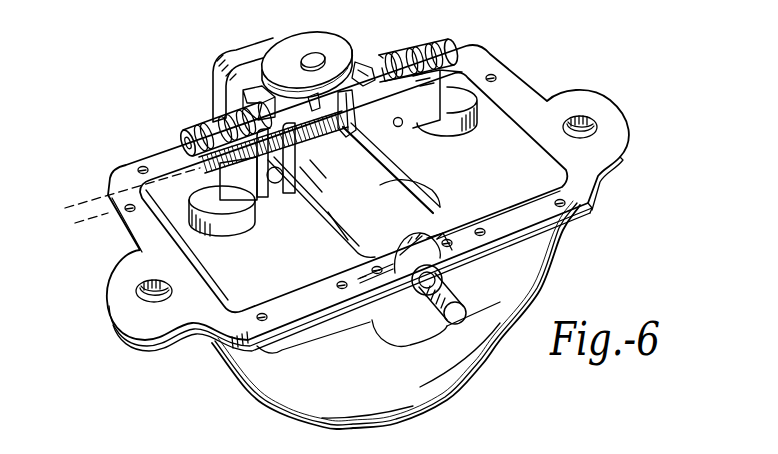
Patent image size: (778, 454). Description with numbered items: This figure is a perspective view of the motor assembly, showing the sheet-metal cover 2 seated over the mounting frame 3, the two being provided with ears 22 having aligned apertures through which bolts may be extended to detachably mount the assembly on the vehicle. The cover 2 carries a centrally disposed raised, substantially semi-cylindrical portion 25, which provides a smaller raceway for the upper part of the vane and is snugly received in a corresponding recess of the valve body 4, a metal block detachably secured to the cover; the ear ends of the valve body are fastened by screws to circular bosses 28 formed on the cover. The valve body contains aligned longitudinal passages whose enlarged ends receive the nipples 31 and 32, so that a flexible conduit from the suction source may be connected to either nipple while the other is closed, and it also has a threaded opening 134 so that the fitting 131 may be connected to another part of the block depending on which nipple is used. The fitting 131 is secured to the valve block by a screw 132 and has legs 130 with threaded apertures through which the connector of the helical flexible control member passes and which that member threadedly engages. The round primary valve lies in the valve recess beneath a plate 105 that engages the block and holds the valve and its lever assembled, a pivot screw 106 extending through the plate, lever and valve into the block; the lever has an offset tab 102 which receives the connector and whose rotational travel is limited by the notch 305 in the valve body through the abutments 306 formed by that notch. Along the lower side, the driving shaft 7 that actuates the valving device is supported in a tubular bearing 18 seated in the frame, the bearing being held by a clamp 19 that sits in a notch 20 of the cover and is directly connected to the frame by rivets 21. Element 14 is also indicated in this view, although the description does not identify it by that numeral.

The cover 2 is at (587, 183).
The mounting frame 3 is at (587, 217).
The valve body 4 is at (420, 100).
The driving shaft 7 is at (464, 308).
The disc 14 is at (288, 346).
The tubular bearing 18 is at (437, 308).
The clamp 19 is at (445, 231).
The notch 20 is at (357, 277).
The rivets 21 is at (437, 233).
The ears 22 is at (617, 153).
The raised semi-cylindrical portion 25 is at (418, 188).
The circular bosses 28 is at (227, 233).
The nipple 31 is at (433, 40).
The nipple 32 is at (183, 124).
The offset tab 102 is at (348, 99).
The plate 105 is at (283, 48).
The pivot screw 106 is at (327, 57).
The legs 130 is at (296, 163).
The fitting 131 is at (275, 190).
The screw 132 is at (295, 180).
The threaded opening 134 is at (401, 126).
The notch 305 is at (317, 103).
The abutments 306 is at (317, 97).